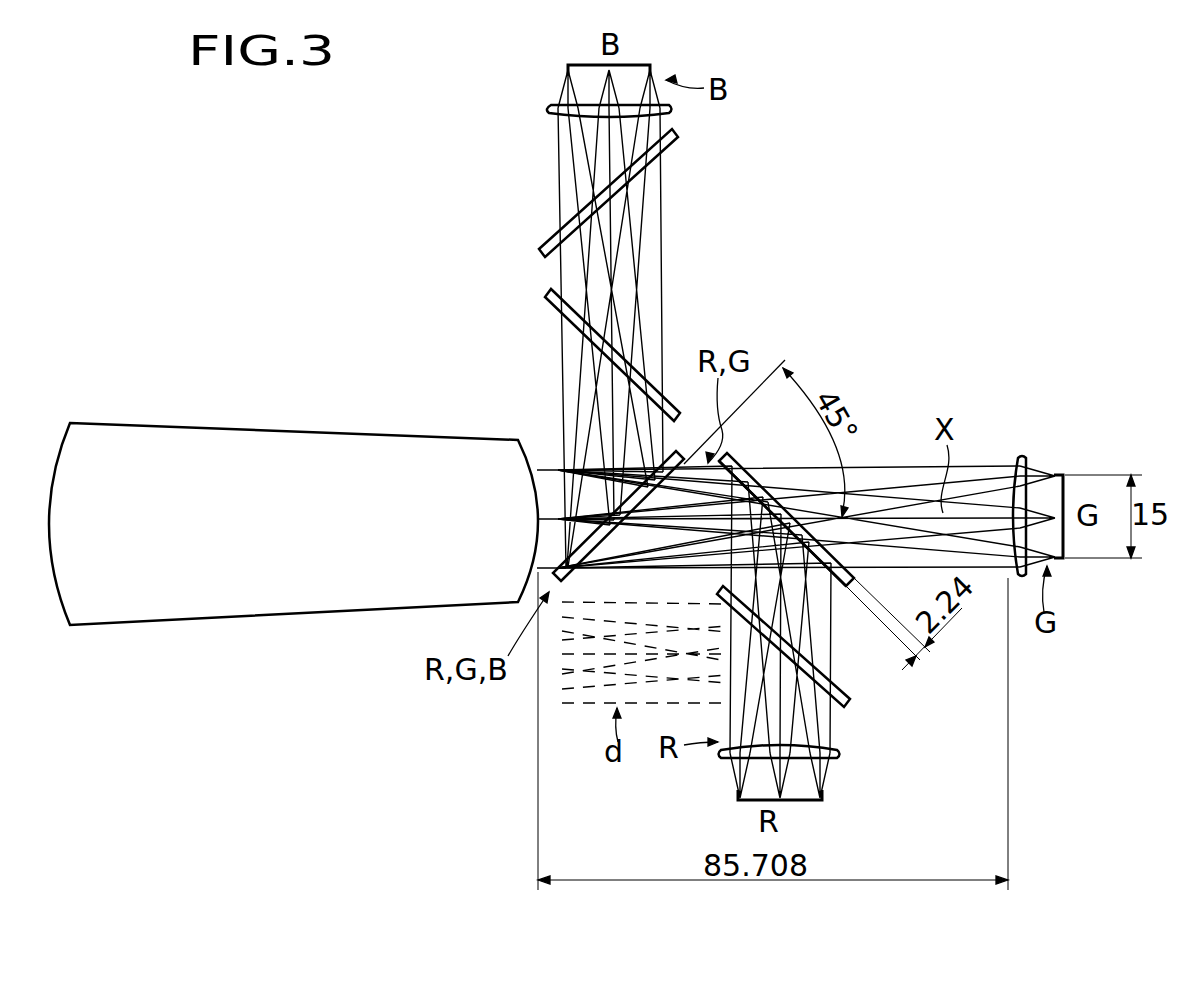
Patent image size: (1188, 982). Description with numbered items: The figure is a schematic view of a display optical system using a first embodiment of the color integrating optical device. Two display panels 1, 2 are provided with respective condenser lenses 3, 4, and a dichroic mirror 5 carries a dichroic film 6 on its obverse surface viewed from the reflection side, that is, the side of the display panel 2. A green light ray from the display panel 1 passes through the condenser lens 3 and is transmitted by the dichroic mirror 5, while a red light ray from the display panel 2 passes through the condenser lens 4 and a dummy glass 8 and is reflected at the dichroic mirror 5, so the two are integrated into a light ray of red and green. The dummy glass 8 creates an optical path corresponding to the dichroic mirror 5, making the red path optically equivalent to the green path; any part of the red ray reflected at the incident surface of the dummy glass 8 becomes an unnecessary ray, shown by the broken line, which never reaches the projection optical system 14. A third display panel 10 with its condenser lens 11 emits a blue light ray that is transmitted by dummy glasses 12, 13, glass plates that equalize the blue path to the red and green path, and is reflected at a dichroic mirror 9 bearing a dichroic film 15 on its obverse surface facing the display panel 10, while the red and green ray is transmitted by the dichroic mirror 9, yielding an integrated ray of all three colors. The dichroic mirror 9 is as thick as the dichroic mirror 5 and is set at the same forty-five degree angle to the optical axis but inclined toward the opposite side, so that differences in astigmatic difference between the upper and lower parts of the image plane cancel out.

The display panel 1 is at (1067, 497).
The display panel 2 is at (810, 801).
The condenser lens 3 is at (1020, 456).
The condenser lens 4 is at (838, 756).
The dichroic mirror 5 is at (740, 455).
The dichroic film 6 is at (844, 588).
The dummy glass 8 is at (845, 697).
The dichroic mirror 9 is at (684, 455).
The display panel 10 is at (586, 64).
The condenser lens 11 is at (552, 107).
The dummy glass 12 is at (545, 246).
The dummy glass 13 is at (548, 300).
The projection optical system 14 is at (312, 443).
The dichroic film 15 is at (558, 492).